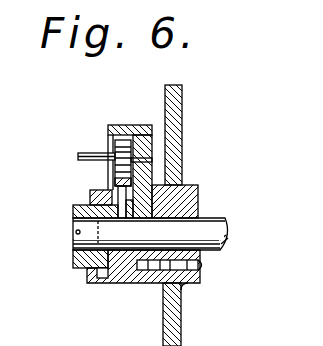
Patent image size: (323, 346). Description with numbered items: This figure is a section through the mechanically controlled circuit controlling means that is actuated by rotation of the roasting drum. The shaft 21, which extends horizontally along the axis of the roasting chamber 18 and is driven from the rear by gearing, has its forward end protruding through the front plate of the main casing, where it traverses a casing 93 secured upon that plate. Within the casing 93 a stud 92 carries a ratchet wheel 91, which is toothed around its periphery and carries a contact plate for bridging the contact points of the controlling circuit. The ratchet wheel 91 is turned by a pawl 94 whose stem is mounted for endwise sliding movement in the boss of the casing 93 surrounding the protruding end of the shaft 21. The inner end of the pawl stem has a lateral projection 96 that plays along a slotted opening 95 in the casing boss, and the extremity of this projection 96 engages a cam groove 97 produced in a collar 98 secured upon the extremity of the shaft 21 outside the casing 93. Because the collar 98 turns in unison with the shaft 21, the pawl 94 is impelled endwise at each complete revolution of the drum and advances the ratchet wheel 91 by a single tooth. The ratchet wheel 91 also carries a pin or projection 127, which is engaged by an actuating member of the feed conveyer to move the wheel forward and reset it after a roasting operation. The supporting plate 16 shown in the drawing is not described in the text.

The supporting plate lower portion 16 is at (177, 312).
The roasting chamber 18 is at (216, 195).
The shaft 21 is at (227, 220).
The ratchet wheel 91 is at (115, 165).
The stud 92 is at (152, 160).
The casing 93 is at (128, 125).
The pawl 94 is at (149, 232).
The slotted opening 95 is at (88, 191).
The lateral projection 96 is at (75, 207).
The cam groove 97 is at (76, 217).
The collar 98 is at (98, 280).
The pin or projection 127 is at (90, 153).